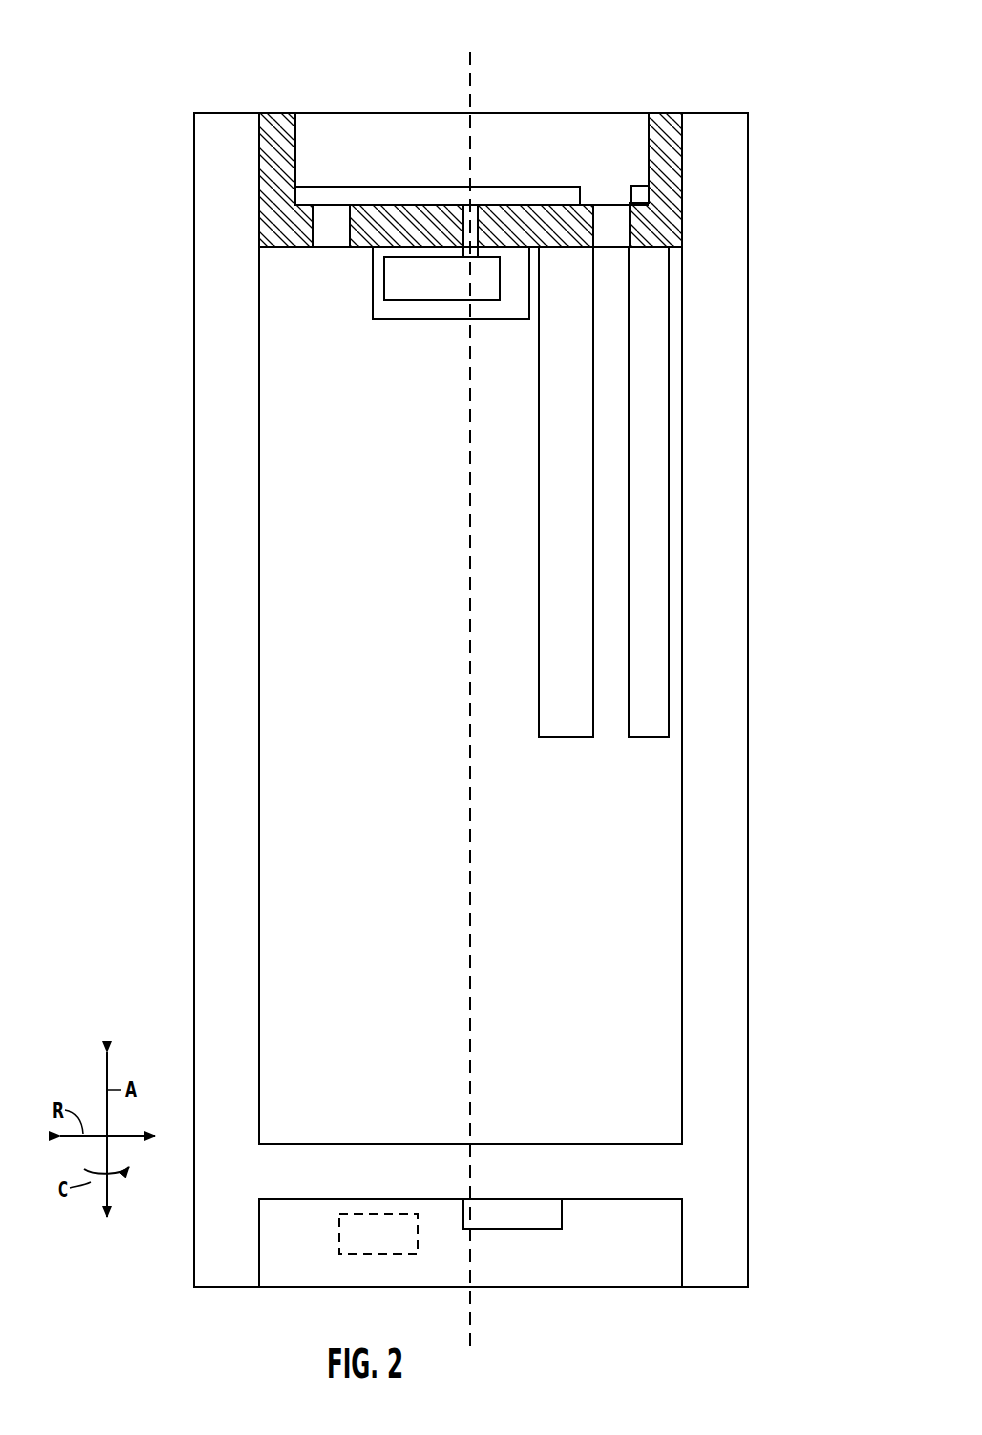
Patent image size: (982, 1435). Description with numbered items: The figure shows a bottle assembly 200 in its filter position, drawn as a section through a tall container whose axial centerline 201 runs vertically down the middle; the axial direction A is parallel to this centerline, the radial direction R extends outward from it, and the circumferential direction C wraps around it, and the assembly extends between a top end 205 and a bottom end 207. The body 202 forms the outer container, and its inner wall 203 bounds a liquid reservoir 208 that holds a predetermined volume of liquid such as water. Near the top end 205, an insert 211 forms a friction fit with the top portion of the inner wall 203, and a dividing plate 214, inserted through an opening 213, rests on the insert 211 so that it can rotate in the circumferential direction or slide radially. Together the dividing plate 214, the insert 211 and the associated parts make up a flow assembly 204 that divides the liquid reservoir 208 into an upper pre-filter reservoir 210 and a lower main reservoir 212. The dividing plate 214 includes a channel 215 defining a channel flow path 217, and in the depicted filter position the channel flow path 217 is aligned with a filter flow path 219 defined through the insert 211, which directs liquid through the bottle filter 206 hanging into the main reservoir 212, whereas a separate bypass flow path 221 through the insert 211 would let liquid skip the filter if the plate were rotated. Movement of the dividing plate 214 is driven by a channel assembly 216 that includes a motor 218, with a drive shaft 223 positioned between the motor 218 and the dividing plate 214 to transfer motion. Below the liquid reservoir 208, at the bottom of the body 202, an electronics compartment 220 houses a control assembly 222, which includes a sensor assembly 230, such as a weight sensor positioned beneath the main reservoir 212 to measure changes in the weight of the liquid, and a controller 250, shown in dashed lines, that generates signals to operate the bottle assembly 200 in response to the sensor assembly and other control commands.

The bottle assembly 200 is at (132, 151).
The axial centerline 201 is at (471, 998).
The body 202 is at (205, 696).
The inner wall 203 is at (260, 860).
The flow assembly 204 is at (386, 234).
The top end 205 is at (574, 70).
The bottle filter 206 is at (554, 470).
The bottom end 207 is at (645, 1321).
The liquid reservoir 208 is at (291, 573).
The pre-filter reservoir 210 is at (348, 137).
The insert 211 is at (679, 170).
The main reservoir 212 is at (650, 838).
The opening 213 is at (421, 95).
The dividing plate 214 is at (412, 192).
The channel 215 is at (582, 203).
The channel assembly 216 is at (409, 309).
The channel flow path 217 is at (614, 183).
The motor 218 is at (482, 303).
The filter flow path 219 is at (615, 227).
The electronics compartment 220 is at (306, 1270).
The bypass flow path 221 is at (321, 227).
The control assembly 222 is at (521, 1298).
The drive shaft 223 is at (483, 221).
The sensor assembly 230 is at (462, 1213).
The controller 250 is at (358, 1214).